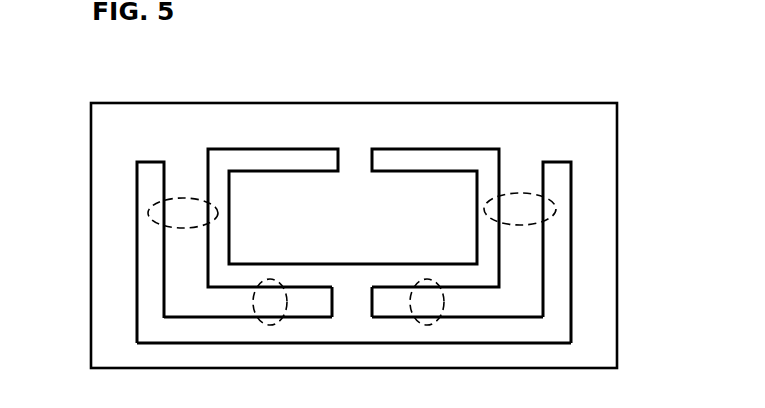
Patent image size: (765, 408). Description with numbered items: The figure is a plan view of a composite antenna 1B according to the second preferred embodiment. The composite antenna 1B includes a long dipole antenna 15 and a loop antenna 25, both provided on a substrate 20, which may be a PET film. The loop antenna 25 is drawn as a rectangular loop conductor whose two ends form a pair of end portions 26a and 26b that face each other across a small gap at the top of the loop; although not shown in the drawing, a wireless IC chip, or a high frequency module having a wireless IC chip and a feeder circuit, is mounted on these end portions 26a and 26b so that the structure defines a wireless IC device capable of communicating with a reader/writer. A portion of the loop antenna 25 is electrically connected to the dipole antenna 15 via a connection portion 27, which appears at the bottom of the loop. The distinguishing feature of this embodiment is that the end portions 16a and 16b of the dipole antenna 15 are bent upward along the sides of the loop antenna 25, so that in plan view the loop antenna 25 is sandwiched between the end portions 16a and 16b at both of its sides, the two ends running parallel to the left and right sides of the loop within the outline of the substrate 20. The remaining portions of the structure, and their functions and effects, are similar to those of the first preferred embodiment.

The composite antenna 1B is at (185, 77).
The dipole antenna 15 is at (462, 332).
The end portion 16a is at (148, 173).
The end portion 16b is at (558, 175).
The substrate 20 is at (552, 103).
The loop antenna 25 is at (463, 148).
The end portion 26a is at (322, 160).
The end portion 26b is at (383, 160).
The connection portion 27 is at (352, 305).